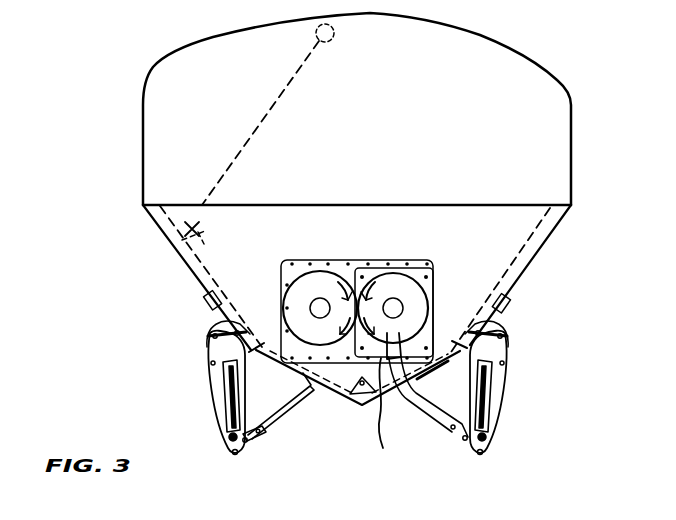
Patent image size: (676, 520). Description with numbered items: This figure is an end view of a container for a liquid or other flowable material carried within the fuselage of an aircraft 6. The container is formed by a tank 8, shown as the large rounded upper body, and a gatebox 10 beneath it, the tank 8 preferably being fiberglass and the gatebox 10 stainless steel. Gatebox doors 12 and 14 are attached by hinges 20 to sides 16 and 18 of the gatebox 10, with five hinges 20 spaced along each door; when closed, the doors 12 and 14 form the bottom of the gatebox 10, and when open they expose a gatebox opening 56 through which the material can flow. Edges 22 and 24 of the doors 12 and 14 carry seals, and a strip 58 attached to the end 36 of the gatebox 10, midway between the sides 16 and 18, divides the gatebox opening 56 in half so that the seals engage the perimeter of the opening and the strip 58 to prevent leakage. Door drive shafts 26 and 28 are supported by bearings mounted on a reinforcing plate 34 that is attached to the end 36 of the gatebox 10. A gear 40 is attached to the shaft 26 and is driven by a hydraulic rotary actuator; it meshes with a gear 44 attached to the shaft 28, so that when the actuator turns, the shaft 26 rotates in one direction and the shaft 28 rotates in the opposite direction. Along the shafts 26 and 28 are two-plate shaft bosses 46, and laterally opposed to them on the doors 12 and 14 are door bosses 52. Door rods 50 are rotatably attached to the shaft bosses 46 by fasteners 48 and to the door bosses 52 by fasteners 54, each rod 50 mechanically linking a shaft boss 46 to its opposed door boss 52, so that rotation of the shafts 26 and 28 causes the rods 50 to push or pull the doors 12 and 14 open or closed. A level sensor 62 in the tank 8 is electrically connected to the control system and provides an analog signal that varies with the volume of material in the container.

The aircraft 6 is at (579, 204).
The tank 8 is at (548, 105).
The gatebox 10 is at (527, 270).
The gatebox door 12 is at (503, 400).
The gatebox door 14 is at (212, 405).
The side of gatebox 16 is at (503, 305).
The side of gatebox 18 is at (208, 303).
The hinges 20 is at (210, 337).
The edge of door 22 is at (480, 455).
The edge of door 24 is at (236, 455).
The door drive shaft 26 is at (396, 308).
The door drive shaft 28 is at (318, 308).
The reinforcing plate 34 is at (414, 262).
The end of gatebox 36 is at (515, 250).
The gear 40 is at (384, 283).
The gear 44 is at (305, 283).
The two-plate shaft boss 46 is at (396, 397).
The fastener 48 is at (434, 375).
The door rod 50 is at (294, 402).
The door boss 52 is at (258, 440).
The fastener 54 is at (264, 432).
The gatebox opening 56 is at (383, 448).
The strip 58 is at (363, 406).
The level sensor 62 is at (184, 238).